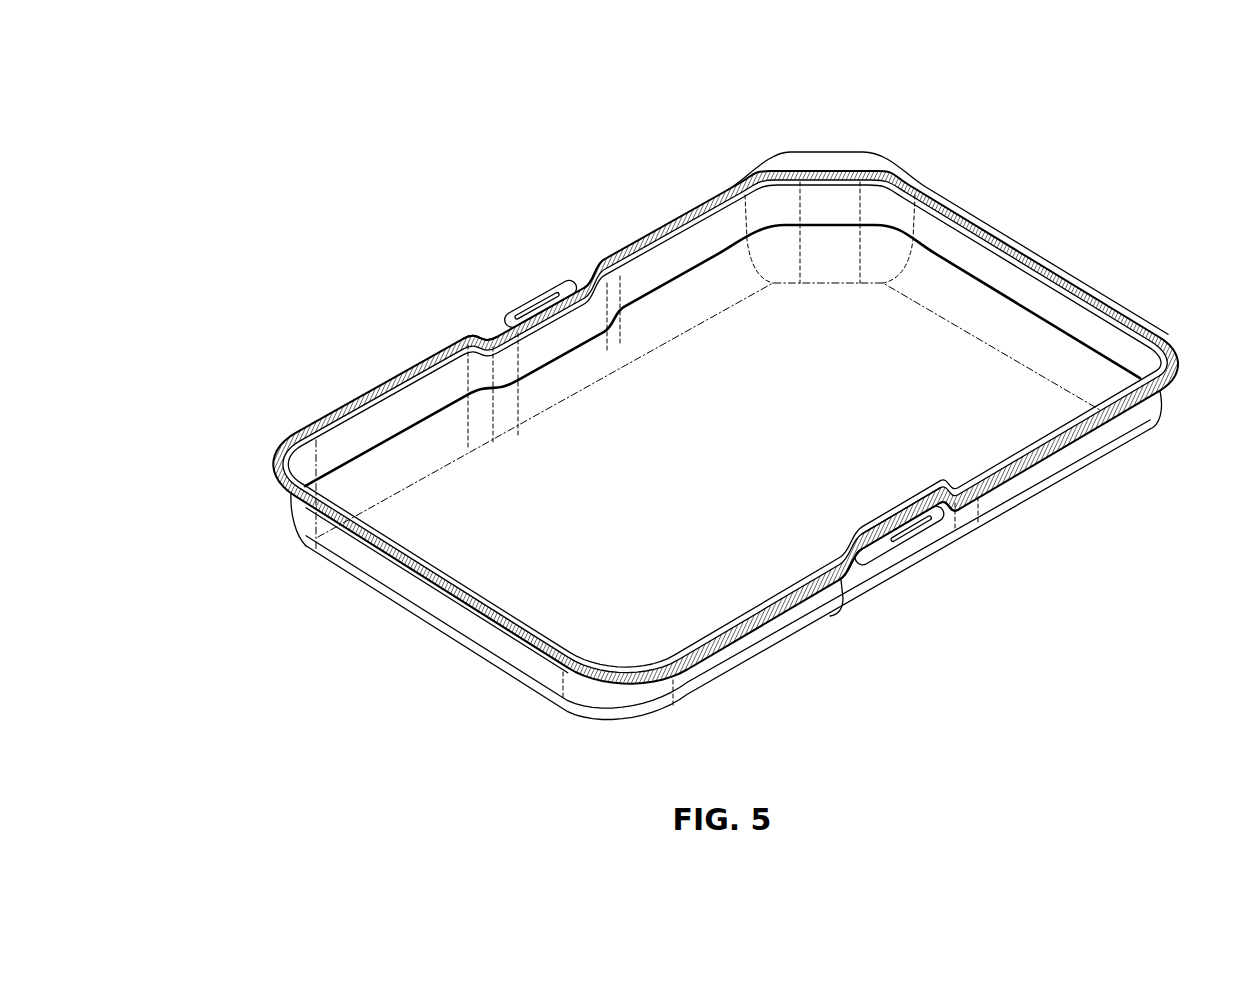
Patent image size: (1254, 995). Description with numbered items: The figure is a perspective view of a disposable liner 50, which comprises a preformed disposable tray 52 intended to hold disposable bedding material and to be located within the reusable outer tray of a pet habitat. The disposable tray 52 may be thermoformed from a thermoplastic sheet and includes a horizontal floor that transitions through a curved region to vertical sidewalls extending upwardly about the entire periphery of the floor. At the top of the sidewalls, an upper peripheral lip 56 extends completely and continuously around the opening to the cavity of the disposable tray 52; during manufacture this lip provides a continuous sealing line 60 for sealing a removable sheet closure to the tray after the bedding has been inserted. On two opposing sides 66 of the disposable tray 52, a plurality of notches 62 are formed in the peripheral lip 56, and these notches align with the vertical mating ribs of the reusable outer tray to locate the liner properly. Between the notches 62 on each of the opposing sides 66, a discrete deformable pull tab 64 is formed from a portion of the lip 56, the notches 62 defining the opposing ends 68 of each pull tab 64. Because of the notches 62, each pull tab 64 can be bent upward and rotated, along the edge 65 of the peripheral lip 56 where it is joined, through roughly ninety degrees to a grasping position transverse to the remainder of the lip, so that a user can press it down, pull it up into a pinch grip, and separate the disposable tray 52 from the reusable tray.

The disposable liner 50 is at (290, 108).
The disposable tray 52 is at (430, 593).
The upper peripheral lip 56 is at (1180, 358).
The continuous sealing line 60 is at (1030, 458).
The notches 62 is at (584, 287).
The deformable pull tabs 64 is at (536, 304).
The edge of the peripheral lip 65 is at (927, 500).
The opposing sides 66 is at (396, 241).
The opposing ends of the deformable pull tabs 68 is at (577, 284).